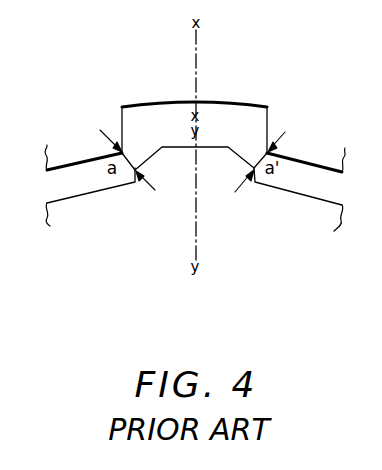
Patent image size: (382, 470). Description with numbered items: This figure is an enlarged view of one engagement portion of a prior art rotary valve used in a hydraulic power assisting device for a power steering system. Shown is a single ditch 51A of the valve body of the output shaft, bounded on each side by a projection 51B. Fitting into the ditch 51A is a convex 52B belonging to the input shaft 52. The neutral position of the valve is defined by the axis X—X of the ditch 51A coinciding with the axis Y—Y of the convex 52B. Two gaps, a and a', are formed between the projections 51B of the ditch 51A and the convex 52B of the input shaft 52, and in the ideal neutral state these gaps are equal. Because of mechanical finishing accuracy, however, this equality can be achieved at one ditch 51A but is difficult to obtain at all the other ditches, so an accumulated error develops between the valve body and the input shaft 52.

The ditch 51A is at (225, 103).
The projection 51B is at (272, 145).
The convex 52B is at (227, 163).
The input shaft 52 is at (277, 198).